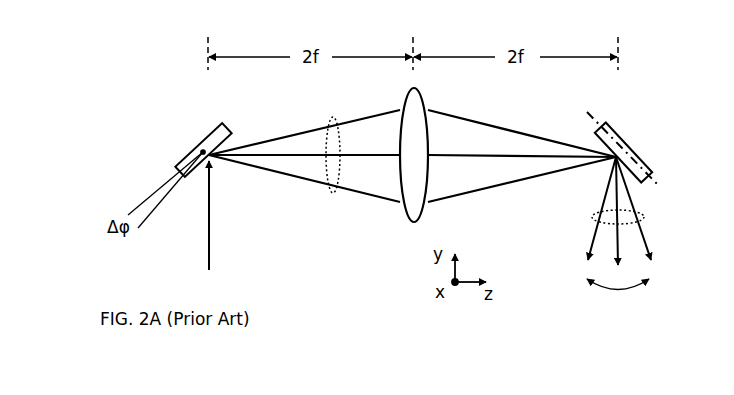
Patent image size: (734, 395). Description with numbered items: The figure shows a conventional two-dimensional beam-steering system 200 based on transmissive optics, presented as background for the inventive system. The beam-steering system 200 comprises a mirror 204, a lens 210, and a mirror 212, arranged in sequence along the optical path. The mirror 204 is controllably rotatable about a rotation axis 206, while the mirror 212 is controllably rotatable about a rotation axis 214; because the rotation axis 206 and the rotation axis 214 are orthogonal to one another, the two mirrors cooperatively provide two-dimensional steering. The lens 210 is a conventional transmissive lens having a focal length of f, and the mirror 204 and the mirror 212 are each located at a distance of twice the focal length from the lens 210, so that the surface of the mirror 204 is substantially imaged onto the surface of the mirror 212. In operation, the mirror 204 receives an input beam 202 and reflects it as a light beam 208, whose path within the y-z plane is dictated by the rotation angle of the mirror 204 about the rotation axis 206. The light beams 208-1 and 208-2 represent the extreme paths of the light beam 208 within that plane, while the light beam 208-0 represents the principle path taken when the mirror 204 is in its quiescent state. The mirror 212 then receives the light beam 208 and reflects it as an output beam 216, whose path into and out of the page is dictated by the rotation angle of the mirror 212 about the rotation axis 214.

The two-dimensional beam-steering system 200 is at (157, 72).
The input beam 202 is at (207, 243).
The mirror 204 is at (196, 150).
The rotation axis 206 is at (200, 137).
The light beam 208 is at (304, 168).
The principle path of light beam 208-0 is at (347, 155).
The extreme path of light beam 208-1 is at (318, 128).
The extreme path of light beam 208-2 is at (318, 182).
The lens 210 is at (405, 217).
The mirror 212 is at (647, 153).
The rotation axis 214 is at (600, 117).
The output beam 216 is at (598, 213).